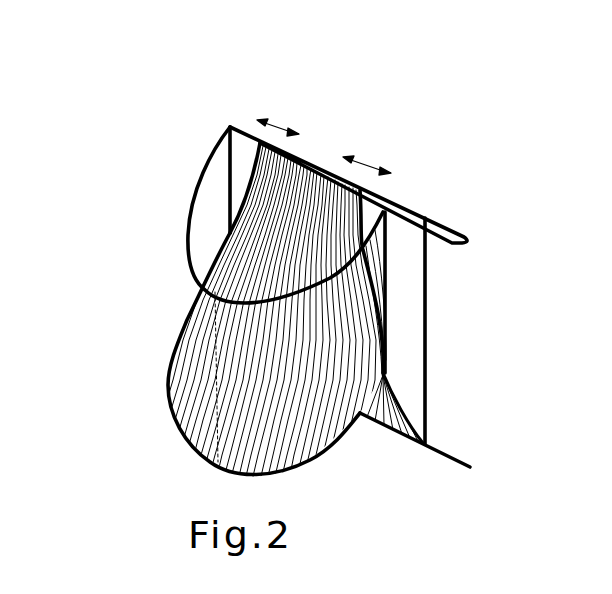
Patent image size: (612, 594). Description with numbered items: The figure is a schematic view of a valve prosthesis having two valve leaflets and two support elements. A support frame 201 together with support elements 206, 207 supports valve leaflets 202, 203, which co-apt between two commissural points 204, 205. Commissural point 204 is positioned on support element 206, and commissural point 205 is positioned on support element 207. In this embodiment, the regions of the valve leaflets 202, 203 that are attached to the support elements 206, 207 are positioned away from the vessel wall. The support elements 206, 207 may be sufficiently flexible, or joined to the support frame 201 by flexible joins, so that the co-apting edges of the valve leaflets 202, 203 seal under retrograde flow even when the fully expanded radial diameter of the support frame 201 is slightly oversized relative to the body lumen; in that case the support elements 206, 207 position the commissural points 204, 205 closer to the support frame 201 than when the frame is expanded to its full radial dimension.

The support frame 201 is at (200, 186).
The valve leaflet 202 is at (197, 372).
The valve leaflet 203 is at (390, 433).
The commissural point 204 is at (358, 200).
The commissural point 205 is at (260, 121).
The support element 206 is at (368, 273).
The support element 207 is at (252, 170).